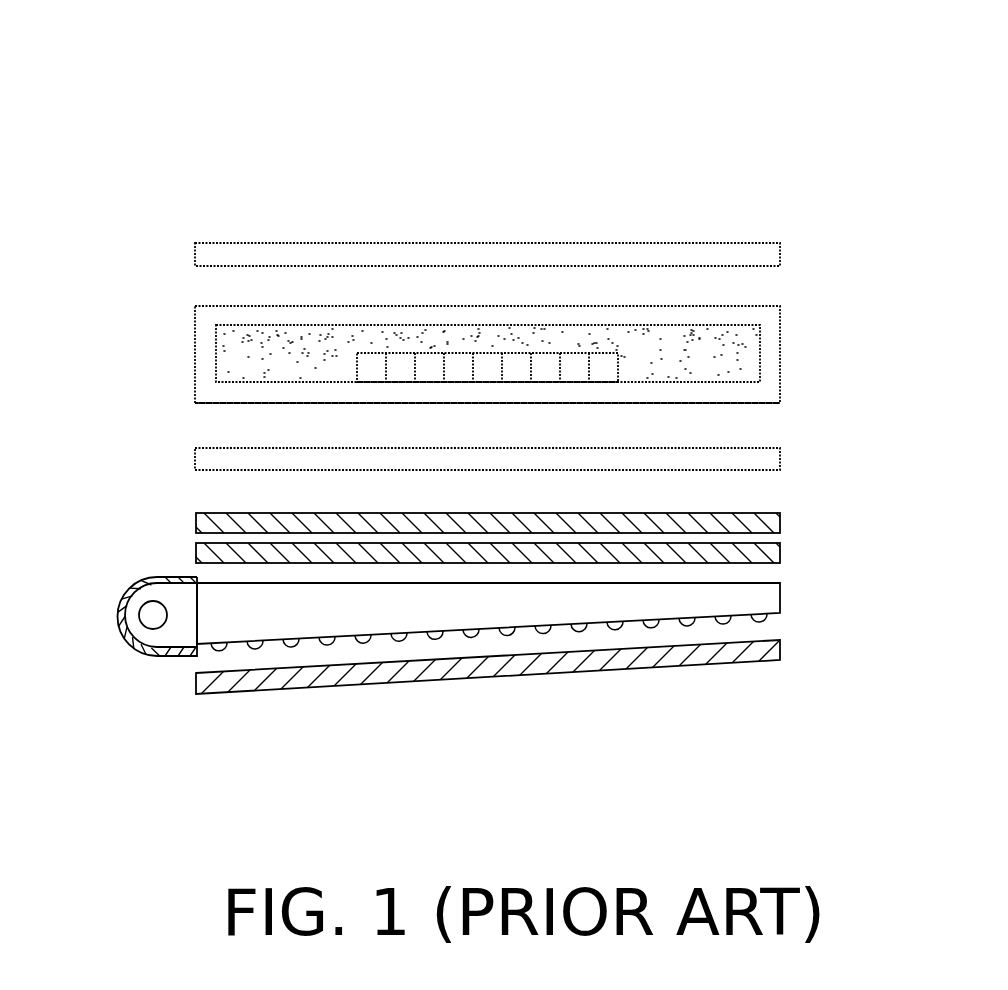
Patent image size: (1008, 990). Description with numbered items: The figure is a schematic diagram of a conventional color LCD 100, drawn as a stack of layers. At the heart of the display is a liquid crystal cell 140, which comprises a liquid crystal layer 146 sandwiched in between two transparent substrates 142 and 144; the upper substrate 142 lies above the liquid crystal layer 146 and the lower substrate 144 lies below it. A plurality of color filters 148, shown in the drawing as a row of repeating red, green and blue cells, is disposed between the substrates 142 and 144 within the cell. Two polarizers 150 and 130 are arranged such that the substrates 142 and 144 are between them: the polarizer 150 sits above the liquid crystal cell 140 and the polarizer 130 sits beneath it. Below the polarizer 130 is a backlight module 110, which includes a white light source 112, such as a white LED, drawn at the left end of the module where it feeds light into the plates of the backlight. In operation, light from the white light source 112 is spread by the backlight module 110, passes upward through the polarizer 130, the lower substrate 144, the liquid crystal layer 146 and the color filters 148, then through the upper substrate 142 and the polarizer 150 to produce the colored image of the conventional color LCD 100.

The conventional color LCD 100 is at (158, 92).
The backlight module 110 is at (454, 606).
The white light source 112 is at (153, 615).
The polarizer 130 is at (775, 460).
The liquid crystal cell 140 is at (492, 294).
The transparent substrate 142 is at (200, 313).
The transparent substrate 144 is at (200, 398).
The liquid crystal layer 146 is at (217, 367).
The color filters 148 is at (487, 353).
The polarizer 150 is at (772, 252).